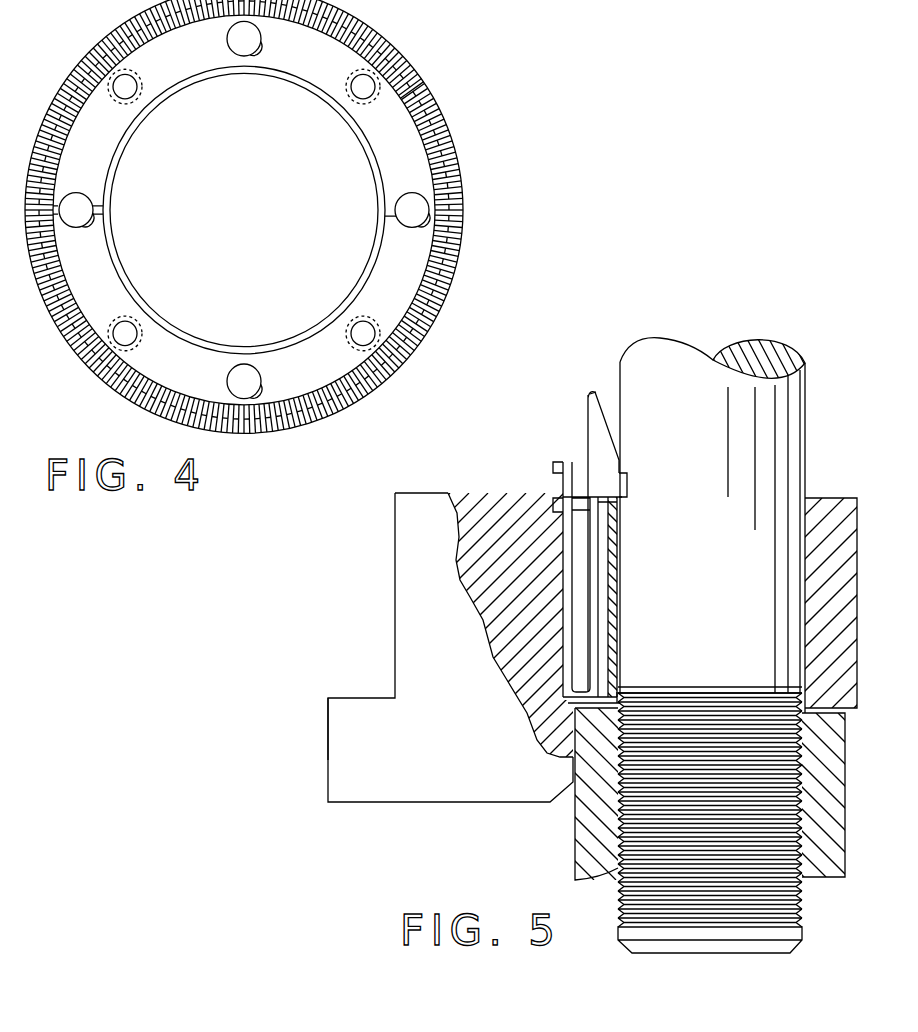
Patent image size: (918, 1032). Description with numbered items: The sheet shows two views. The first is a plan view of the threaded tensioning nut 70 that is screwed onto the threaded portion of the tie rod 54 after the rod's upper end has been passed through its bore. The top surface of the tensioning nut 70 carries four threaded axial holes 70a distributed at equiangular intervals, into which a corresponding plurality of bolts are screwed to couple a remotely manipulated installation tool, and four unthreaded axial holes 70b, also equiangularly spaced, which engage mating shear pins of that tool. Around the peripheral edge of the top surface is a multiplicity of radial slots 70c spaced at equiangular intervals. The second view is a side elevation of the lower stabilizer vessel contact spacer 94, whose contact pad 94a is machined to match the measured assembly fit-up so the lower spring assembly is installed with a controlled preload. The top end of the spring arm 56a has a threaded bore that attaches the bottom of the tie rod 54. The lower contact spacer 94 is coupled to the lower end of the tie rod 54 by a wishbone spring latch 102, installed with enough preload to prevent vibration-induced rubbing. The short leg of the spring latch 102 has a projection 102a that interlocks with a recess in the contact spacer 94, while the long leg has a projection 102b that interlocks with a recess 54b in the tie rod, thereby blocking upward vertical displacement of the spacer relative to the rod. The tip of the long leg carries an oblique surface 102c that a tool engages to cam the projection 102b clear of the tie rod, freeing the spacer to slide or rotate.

In FIG. 4, the tensioning nut 70 is at (388, 37).
In FIG. 4, the threaded axial holes 70a is at (133, 100).
In FIG. 4, the unthreaded axial holes 70b is at (262, 40).
In FIG. 4, the radial slots 70c is at (428, 103).
In FIG. 5, the tie rod 54 is at (690, 621).
In FIG. 5, the recess 54b is at (626, 508).
In FIG. 5, the spring arm 56a is at (577, 850).
In FIG. 5, the lower contact spacer 94 is at (400, 493).
In FIG. 5, the contact pad 94a is at (330, 705).
In FIG. 5, the wishbone spring latch 102 is at (588, 420).
In FIG. 5, the projection 102a is at (563, 495).
In FIG. 5, the projection 102b is at (622, 487).
In FIG. 5, the oblique surface 102c is at (597, 395).